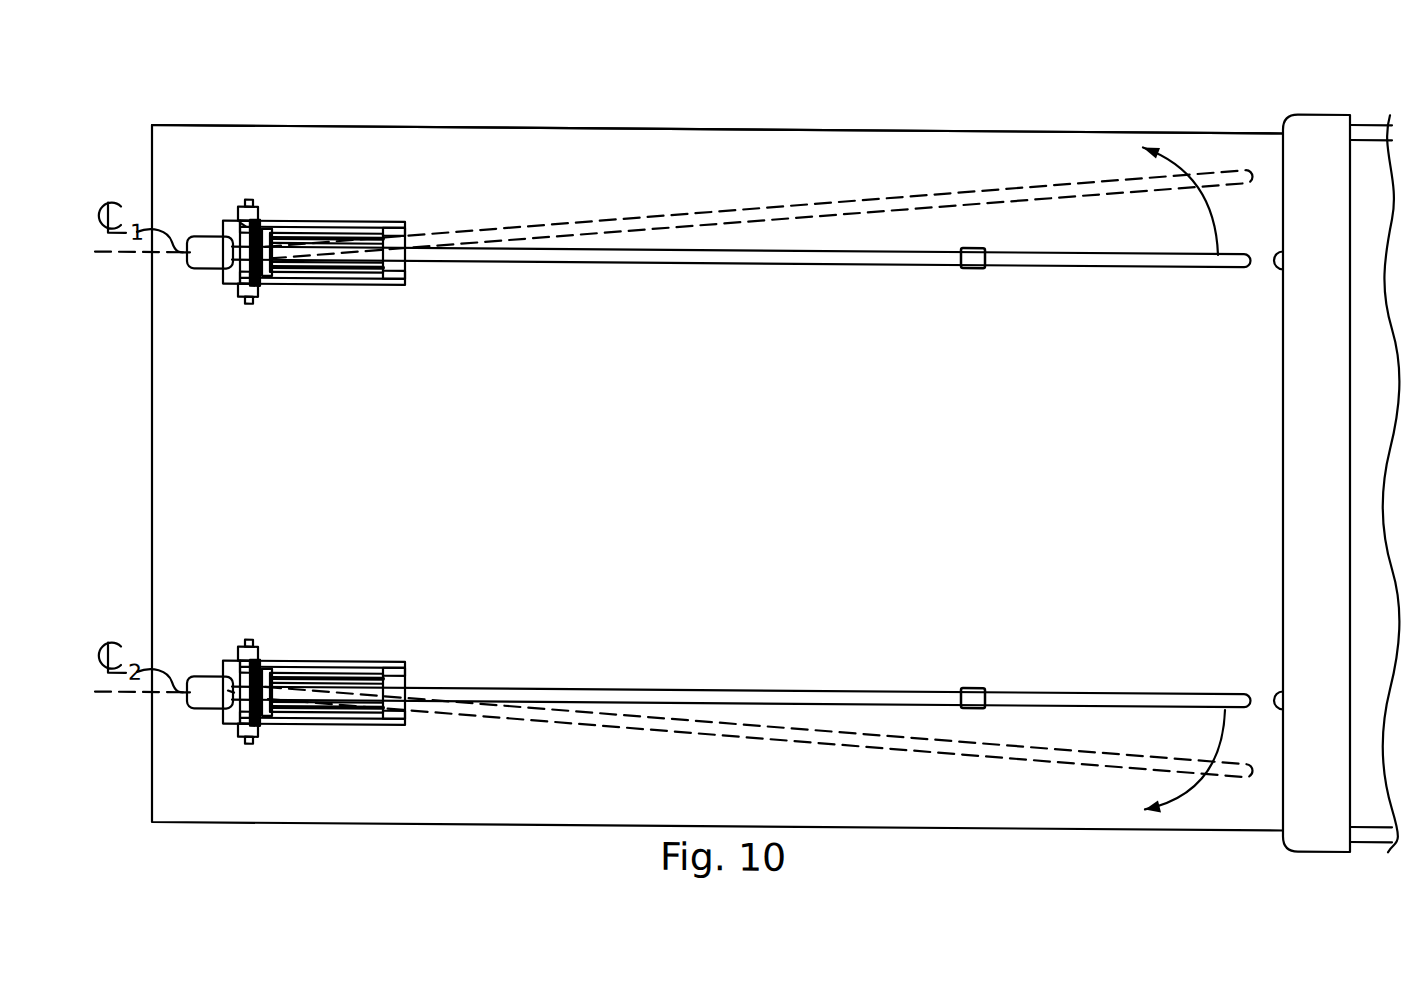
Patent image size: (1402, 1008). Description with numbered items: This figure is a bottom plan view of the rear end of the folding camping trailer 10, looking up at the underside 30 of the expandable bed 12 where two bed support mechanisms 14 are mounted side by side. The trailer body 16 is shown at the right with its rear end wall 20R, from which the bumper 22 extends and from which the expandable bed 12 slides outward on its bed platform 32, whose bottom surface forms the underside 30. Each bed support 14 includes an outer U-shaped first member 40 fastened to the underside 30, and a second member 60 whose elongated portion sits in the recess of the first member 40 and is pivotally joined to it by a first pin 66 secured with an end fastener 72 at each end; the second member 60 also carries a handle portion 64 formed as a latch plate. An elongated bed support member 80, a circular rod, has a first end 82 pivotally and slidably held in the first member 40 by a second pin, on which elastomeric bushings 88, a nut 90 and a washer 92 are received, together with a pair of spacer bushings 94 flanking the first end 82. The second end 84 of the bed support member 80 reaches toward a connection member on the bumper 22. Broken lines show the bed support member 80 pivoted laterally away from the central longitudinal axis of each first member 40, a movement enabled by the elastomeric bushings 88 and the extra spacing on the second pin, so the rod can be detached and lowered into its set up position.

The folding camping trailer 10 is at (438, 112).
The expandable bed 12 is at (140, 160).
The bed support mechanism 14 is at (485, 318).
The trailer body 16 is at (1370, 591).
The rear end wall 20R is at (1281, 539).
The bumper 22 is at (1297, 651).
The underside 30 is at (727, 484).
The bed platform 32 is at (315, 125).
The first member 40 is at (405, 222).
The second member 60 is at (410, 240).
The handle portion 64 is at (190, 268).
The first pin 66 is at (300, 235).
The end fastener 72 is at (270, 232).
The bed support member 80 is at (725, 259).
The first end 82 is at (243, 222).
The second end 84 is at (1218, 260).
The elastomeric bushing 88 is at (262, 300).
The nut 90 is at (247, 205).
The washer 92 is at (262, 217).
The spacer bushing 94 is at (235, 237).